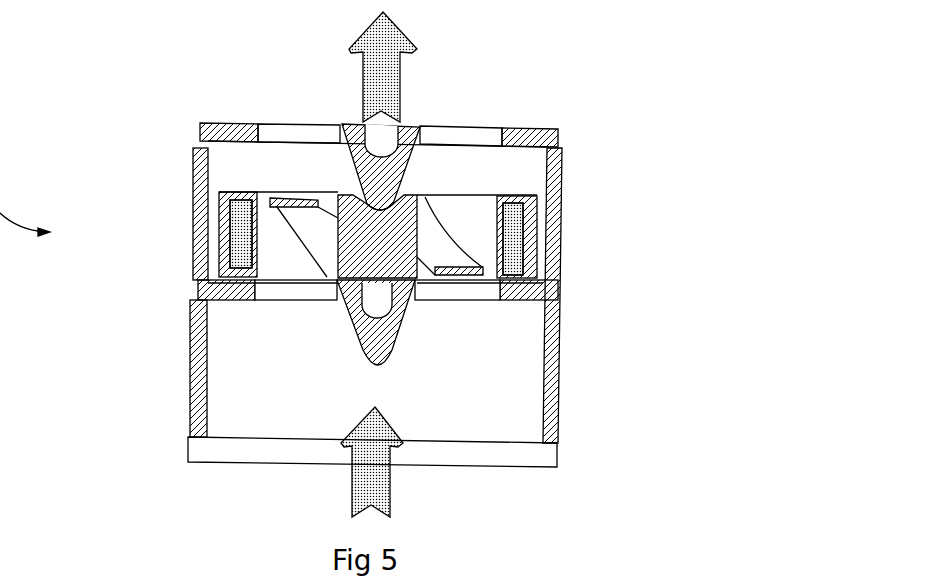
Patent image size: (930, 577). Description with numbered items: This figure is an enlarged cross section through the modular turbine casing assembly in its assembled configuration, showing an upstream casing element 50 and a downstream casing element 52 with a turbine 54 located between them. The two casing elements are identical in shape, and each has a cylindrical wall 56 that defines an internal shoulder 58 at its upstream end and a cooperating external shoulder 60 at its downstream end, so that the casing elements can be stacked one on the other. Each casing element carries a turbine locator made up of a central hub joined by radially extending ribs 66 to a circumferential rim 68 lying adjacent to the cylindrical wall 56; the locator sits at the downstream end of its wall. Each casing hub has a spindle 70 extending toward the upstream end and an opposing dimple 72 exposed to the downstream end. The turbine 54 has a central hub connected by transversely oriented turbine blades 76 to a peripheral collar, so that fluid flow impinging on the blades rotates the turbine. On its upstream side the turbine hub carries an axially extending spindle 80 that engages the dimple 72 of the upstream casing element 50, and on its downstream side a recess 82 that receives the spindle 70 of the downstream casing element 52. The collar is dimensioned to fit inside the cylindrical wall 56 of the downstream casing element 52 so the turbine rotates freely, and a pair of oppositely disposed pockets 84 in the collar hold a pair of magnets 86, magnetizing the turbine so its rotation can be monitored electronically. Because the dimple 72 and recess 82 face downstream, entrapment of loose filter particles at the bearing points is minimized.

The upstream casing element 50 is at (572, 393).
The downstream casing element 52 is at (576, 198).
The turbine 54 is at (542, 251).
The cylindrical wall 56 is at (193, 228).
The internal shoulder 58 is at (190, 298).
The external shoulder 60 is at (200, 130).
The radially extending ribs 66 is at (283, 123).
The circumferential rim 68 is at (222, 123).
The spindle 70 is at (402, 165).
The dimple 72 is at (372, 118).
The turbine blades 76 is at (451, 247).
The axially extending spindle 80 is at (350, 302).
The recess 82 is at (365, 190).
The pockets 84 is at (193, 175).
The magnets 86 is at (262, 165).